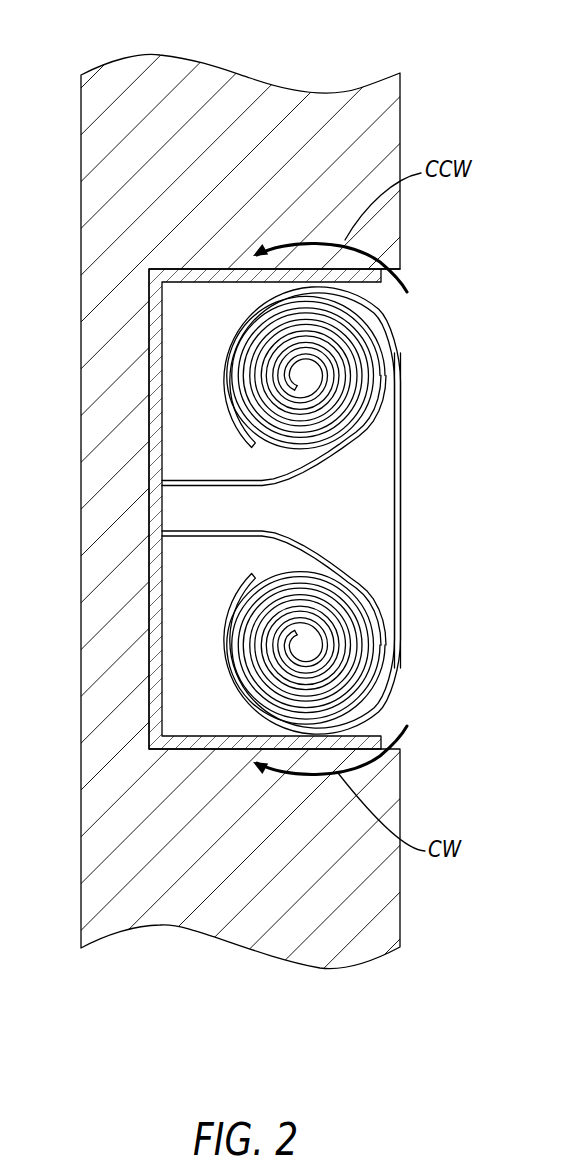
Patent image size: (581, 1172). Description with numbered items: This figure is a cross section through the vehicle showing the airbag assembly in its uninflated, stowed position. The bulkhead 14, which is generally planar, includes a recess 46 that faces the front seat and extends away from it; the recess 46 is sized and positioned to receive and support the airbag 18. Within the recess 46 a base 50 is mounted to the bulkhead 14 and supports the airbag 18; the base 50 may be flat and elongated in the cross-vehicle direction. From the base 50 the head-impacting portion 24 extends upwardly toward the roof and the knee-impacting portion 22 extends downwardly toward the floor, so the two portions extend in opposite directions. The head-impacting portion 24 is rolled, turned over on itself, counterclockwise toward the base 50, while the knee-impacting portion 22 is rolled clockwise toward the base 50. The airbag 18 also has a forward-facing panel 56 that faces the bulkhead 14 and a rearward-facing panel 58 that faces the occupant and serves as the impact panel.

The bulkhead 14 is at (143, 100).
The airbag 18 is at (416, 499).
The knee-impacting portion 22 is at (404, 680).
The head-impacting portion 24 is at (400, 340).
The recess 46 is at (440, 283).
The base 50 is at (164, 582).
The forward-facing panel 56 is at (206, 479).
The rearward-facing panel 58 is at (402, 447).